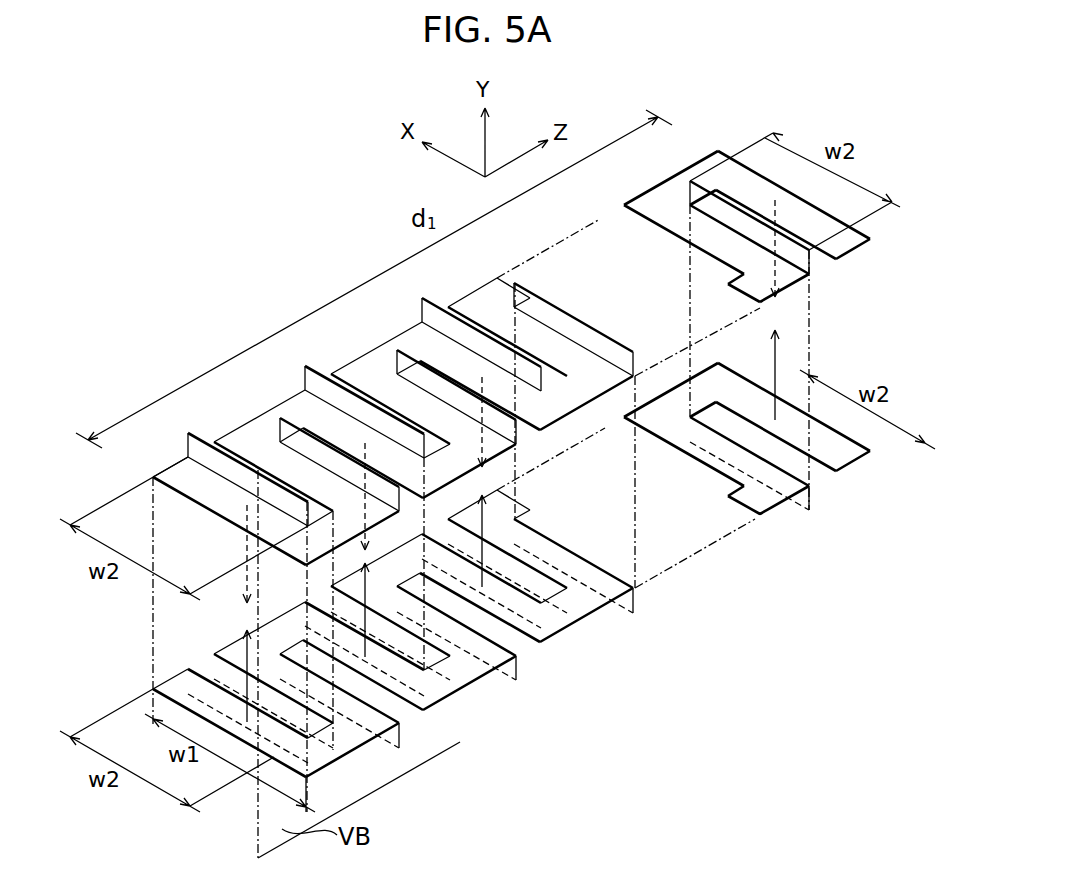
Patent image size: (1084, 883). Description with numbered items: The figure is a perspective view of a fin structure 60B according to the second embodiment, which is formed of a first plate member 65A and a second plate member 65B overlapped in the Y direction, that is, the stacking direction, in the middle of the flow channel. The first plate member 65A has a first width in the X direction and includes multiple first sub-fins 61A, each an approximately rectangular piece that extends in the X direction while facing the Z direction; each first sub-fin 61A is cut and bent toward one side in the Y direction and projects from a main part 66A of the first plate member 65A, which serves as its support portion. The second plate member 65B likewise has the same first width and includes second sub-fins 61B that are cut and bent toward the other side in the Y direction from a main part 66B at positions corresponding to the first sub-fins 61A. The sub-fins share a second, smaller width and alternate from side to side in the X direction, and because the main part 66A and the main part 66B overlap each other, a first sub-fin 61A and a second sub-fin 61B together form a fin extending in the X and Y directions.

The fin structure 60B is at (300, 177).
The first sub-fin 61A is at (205, 435).
The first plate member 65A is at (400, 335).
The main part of the first plate member 66A is at (368, 377).
The second sub-fin 61B is at (400, 745).
The second plate member 65B is at (487, 680).
The main part of the second plate member 66B is at (567, 607).